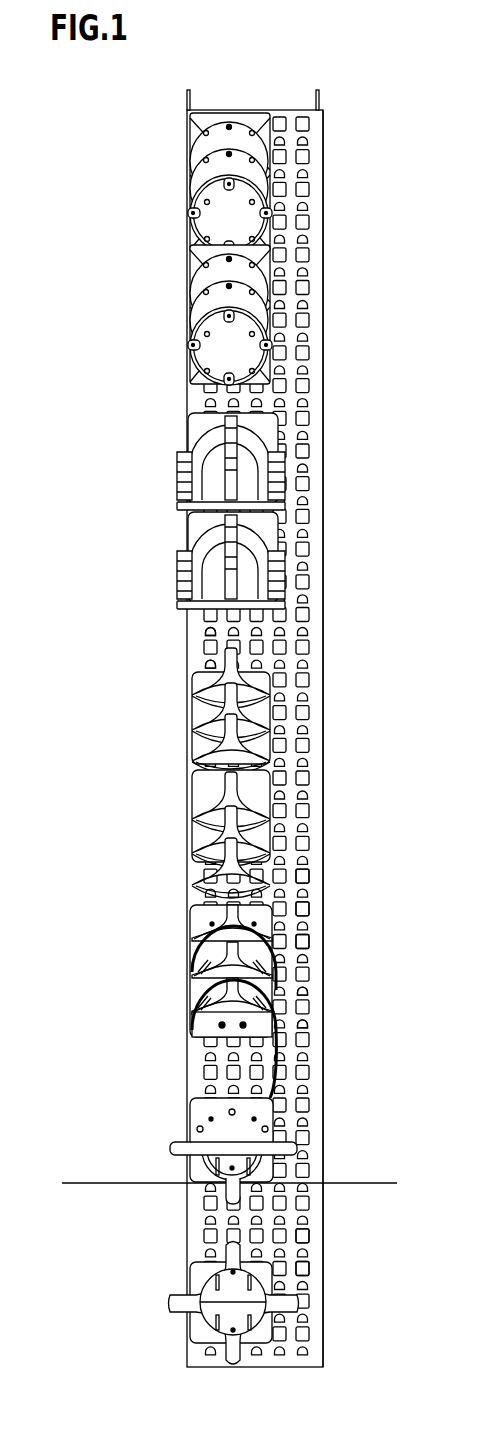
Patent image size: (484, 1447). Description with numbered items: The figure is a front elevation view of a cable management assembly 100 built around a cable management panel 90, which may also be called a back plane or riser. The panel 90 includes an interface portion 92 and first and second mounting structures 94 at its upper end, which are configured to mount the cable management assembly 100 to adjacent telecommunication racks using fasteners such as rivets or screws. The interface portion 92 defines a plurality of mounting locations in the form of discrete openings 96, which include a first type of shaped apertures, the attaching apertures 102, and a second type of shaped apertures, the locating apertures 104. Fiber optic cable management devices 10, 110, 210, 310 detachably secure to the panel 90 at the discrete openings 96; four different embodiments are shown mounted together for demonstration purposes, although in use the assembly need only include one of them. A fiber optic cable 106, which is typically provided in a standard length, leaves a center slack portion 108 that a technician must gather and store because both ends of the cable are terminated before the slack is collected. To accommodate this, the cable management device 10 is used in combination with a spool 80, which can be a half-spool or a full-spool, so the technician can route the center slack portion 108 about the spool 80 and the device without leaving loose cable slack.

The cable management assembly 100 is at (336, 67).
The cable management panel 90 is at (332, 325).
The interface portion 92 is at (323, 632).
The first and second mounting structures 94 is at (187, 100).
The discrete openings 96 is at (304, 434).
The attaching apertures 102 is at (302, 940).
The locating apertures 104 is at (206, 665).
The fiber optic cable management device 210 is at (163, 226).
The fiber optic cable management device 310 is at (163, 489).
The cable management device 10 is at (186, 742).
The fiber optic cable management device 110 is at (168, 1001).
The center slack portion 108 is at (200, 947).
The fiber optic cable 106 is at (128, 1185).
The spool 80 is at (165, 1122).